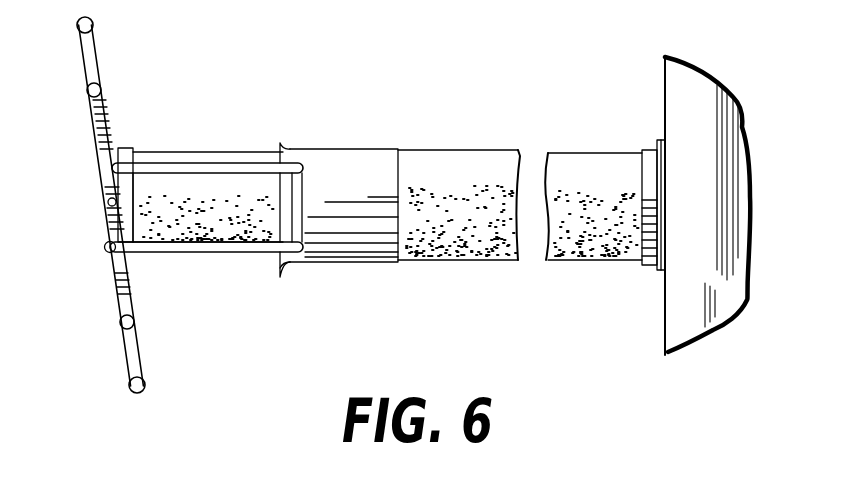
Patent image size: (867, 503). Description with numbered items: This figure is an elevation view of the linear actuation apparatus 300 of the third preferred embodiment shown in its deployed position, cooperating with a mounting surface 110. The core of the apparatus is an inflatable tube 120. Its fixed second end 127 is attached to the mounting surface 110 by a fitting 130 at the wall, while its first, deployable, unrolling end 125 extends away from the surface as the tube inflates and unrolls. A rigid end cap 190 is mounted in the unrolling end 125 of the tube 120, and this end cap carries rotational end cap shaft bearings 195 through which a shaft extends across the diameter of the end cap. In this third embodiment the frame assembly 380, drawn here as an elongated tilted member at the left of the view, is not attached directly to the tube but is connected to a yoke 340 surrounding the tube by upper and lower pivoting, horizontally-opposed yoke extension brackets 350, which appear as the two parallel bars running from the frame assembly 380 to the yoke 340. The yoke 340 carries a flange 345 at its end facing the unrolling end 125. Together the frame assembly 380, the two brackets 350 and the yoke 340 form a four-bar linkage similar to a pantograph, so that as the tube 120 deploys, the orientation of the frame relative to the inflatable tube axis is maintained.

The mounting surface 110 is at (732, 123).
The inflatable tube 120 is at (437, 170).
The first deployable unrolling end 125 is at (189, 132).
The fixed second end 127 is at (596, 277).
The wall fitting 130 is at (652, 267).
The rigid end cap 190 is at (120, 152).
The rotational end cap shaft bearings 195 is at (110, 203).
The linear actuation apparatus 300 is at (278, 117).
The yoke 340 is at (372, 246).
The sleeve flange 345 is at (278, 263).
The yoke extension brackets 350 is at (215, 245).
The frame assembly 380 is at (102, 323).